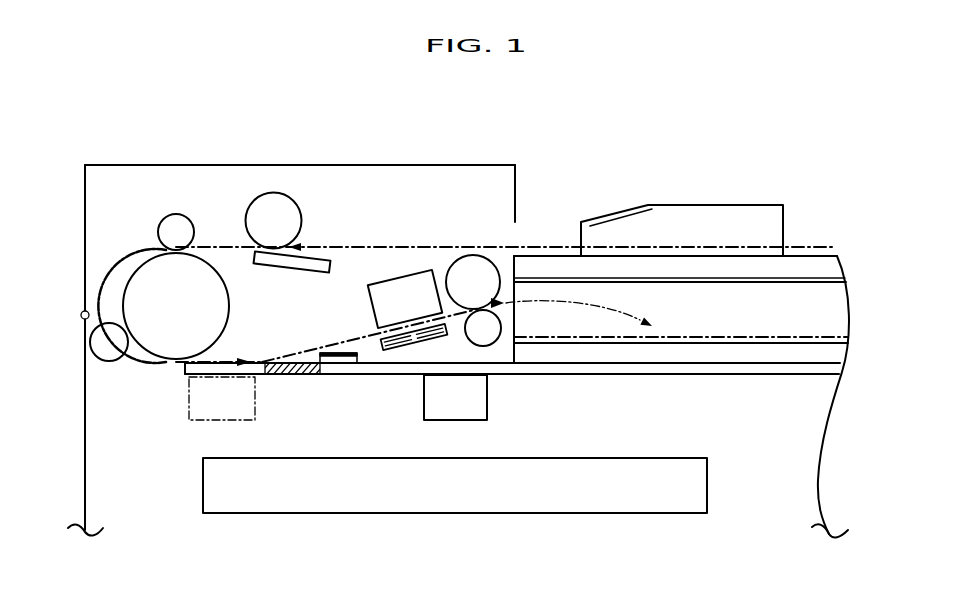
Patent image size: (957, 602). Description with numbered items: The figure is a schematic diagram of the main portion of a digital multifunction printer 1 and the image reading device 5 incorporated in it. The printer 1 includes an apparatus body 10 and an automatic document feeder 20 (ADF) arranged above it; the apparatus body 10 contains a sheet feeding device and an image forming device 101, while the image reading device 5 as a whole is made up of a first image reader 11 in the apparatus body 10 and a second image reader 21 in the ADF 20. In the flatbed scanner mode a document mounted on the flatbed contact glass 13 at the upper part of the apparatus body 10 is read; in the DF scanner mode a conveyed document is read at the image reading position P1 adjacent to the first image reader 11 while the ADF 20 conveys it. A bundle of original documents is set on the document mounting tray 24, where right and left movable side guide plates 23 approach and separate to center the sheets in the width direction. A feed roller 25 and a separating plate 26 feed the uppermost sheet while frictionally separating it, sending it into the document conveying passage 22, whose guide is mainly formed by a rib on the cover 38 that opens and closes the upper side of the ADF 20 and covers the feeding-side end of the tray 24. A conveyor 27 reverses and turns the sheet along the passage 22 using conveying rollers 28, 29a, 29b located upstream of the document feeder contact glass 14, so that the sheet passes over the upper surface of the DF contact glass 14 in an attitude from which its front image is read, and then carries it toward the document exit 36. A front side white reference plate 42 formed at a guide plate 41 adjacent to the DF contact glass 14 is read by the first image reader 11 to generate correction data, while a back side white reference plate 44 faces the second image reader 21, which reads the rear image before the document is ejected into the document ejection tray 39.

The digital multifunction printer 1 is at (615, 143).
The image reading device 5 is at (128, 170).
The apparatus body 10 is at (822, 432).
The first image reader 11 is at (182, 398).
The flatbed contact glass 13 is at (834, 361).
The document feeder contact glass 14 is at (258, 362).
The automatic document feeder 20 is at (833, 245).
The second image reader 21 is at (377, 300).
The document conveying passage 22 is at (502, 242).
The side guide plates 23 is at (716, 211).
The document mounting tray 24 is at (652, 255).
The feed roller 25 is at (290, 209).
The separating plate 26 is at (300, 266).
The conveyor 27 is at (119, 260).
The conveying roller 28 is at (224, 302).
The conveying roller 29a is at (179, 216).
The conveying roller 29b is at (111, 358).
The document exit 36 is at (515, 303).
The cover 38 is at (315, 165).
The document ejection tray 39 is at (773, 346).
The guide plate 41 is at (287, 368).
The front side white reference plate 42 is at (337, 364).
The back side white reference plate 44 is at (404, 342).
The image forming device 101 is at (203, 482).
The image reading position P1 is at (228, 354).